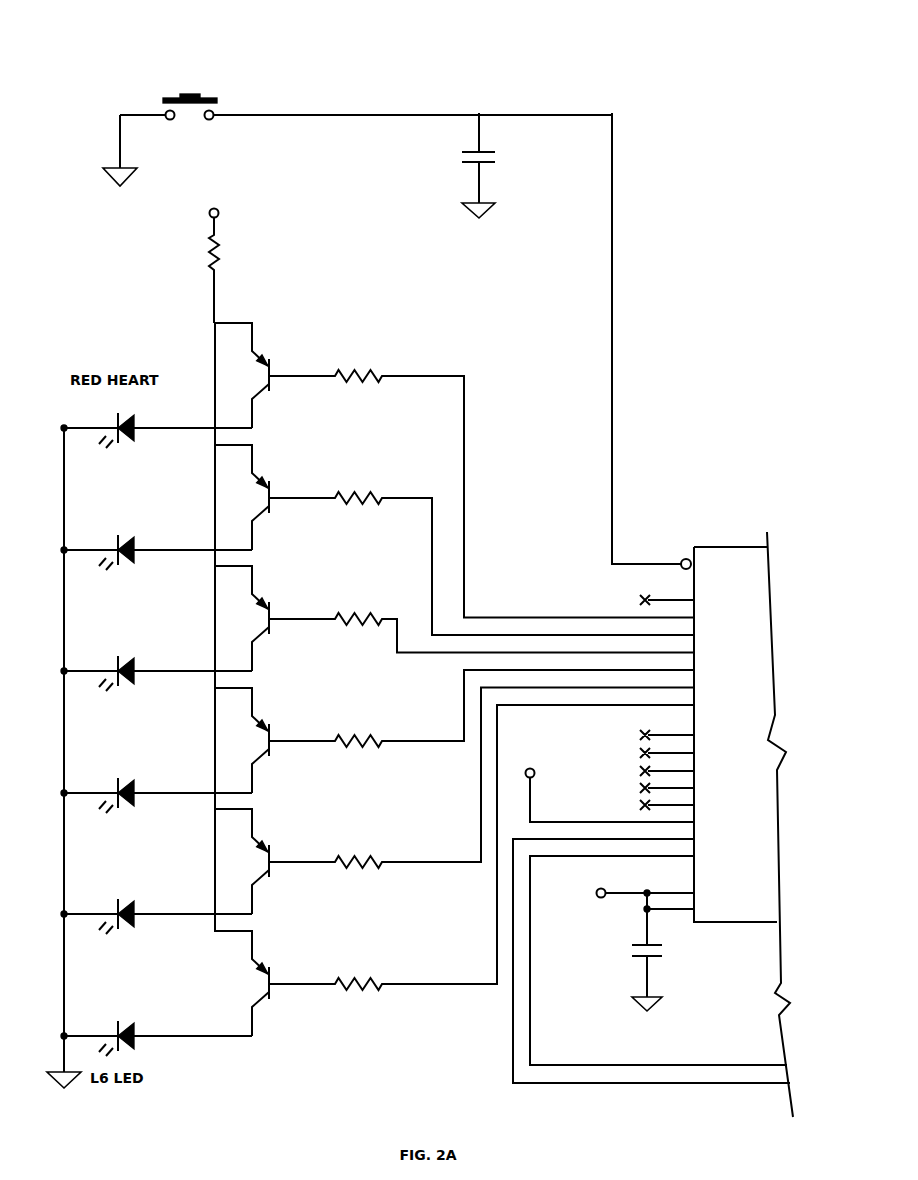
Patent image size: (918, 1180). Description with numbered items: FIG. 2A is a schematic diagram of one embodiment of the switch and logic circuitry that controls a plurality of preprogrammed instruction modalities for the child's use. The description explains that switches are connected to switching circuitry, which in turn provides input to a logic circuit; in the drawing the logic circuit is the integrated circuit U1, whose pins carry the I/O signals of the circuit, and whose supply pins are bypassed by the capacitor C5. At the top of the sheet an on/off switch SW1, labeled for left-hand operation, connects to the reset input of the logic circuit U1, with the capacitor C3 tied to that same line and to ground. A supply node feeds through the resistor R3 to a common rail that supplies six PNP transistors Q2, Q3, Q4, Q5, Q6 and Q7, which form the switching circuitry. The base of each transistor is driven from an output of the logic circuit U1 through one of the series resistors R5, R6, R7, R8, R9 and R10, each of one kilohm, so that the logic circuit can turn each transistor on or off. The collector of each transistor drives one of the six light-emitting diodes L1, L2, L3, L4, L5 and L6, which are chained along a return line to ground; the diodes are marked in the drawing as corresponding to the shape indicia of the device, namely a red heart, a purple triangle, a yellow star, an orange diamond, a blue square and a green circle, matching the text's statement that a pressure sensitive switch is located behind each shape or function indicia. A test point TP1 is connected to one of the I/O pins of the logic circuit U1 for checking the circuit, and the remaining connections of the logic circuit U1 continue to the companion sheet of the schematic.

The on/off switch (left hand) SW1 is at (357, 97).
The capacitor 0.1uF C3 is at (504, 165).
The resistor 20R R3 is at (234, 252).
The transistor 9012 Q2 is at (266, 373).
The transistor 9012 Q3 is at (266, 495).
The transistor 9012 Q4 is at (266, 616).
The transistor 9012 Q5 is at (266, 738).
The transistor 9012 Q6 is at (266, 859).
The transistor 9012 Q7 is at (266, 981).
The resistor 1K R5 is at (481, 478).
The resistor 1K R6 is at (481, 547).
The resistor 1K R7 is at (481, 617).
The resistor 1K R8 is at (481, 718).
The resistor 1K R9 is at (481, 788).
The resistor 1K R10 is at (481, 857).
The LED purple triangle L1 is at (156, 465).
The LED yellow star L2 is at (156, 587).
The LED orange diamond L3 is at (156, 708).
The LED blue square L4 is at (156, 830).
The LED green circle L5 is at (156, 951).
The LED L6 is at (156, 1038).
The microcontroller U1 is at (661, 819).
The test point TP1 is at (599, 769).
The capacitor 0.1uF C5 is at (630, 948).